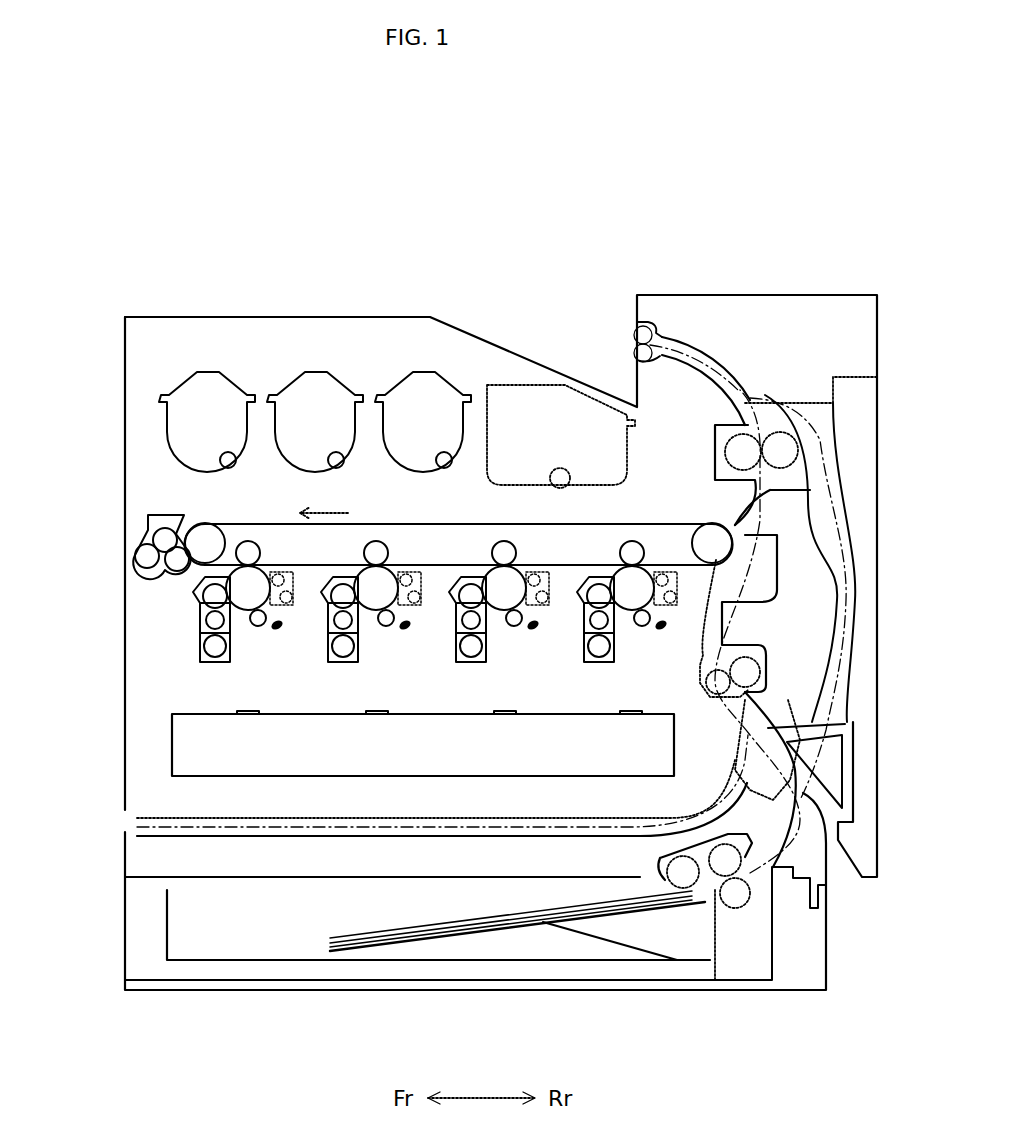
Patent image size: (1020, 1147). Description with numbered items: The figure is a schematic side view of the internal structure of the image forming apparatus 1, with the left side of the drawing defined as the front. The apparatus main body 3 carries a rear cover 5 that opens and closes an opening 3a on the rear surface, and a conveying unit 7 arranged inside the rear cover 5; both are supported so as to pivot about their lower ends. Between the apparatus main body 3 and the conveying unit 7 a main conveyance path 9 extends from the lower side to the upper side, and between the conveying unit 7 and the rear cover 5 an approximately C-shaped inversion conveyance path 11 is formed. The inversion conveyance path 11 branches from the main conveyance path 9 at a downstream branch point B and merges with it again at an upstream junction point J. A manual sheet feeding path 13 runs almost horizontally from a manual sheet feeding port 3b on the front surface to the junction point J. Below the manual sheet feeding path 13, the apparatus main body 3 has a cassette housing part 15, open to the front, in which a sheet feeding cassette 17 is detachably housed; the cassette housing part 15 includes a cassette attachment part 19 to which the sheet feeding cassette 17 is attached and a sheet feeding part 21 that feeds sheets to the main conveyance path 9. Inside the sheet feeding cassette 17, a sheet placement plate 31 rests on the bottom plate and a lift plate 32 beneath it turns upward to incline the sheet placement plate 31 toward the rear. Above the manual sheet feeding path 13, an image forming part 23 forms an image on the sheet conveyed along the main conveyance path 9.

The image forming apparatus 1 is at (575, 238).
The apparatus main body 3 is at (125, 362).
The opening 3a is at (862, 378).
The manual sheet feeding port 3b is at (125, 820).
The rear cover 5 is at (862, 503).
The conveying unit 7 is at (810, 590).
The main conveyance path 9 is at (718, 636).
The inversion conveyance path 11 is at (843, 660).
The manual sheet feeding path 13 is at (435, 826).
The cassette housing part 15 is at (152, 880).
The sheet feeding cassette 17 is at (160, 928).
The cassette attachment part 19 is at (752, 938).
The sheet feeding part 21 is at (640, 873).
The image forming part 23 is at (133, 528).
The sheet placement plate 31 is at (510, 930).
The lift plate 32 is at (612, 945).
The branch point B is at (740, 385).
The junction point J is at (735, 727).